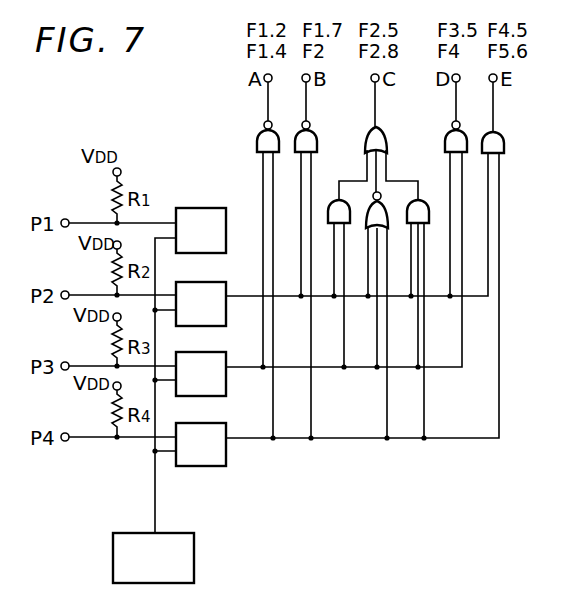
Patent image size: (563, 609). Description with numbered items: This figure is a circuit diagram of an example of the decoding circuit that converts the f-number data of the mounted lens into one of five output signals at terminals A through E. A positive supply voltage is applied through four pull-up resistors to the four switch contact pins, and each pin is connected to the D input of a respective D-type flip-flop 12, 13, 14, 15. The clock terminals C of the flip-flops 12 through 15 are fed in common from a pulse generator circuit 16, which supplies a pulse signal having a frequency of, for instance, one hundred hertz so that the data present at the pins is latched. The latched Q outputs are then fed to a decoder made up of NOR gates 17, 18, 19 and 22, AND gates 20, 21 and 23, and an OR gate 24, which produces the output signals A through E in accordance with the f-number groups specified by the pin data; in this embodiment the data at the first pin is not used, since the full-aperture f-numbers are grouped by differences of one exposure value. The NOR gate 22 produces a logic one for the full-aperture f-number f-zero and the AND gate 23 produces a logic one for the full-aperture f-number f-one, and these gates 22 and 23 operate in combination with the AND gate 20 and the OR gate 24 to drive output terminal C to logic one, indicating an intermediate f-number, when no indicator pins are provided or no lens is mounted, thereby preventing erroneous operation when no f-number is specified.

The D-type flip-flop 12 is at (201, 208).
The D-type flip-flop 13 is at (213, 282).
The D-type flip-flop 14 is at (213, 352).
The D-type flip-flop 15 is at (210, 423).
The pulse generator circuit 16 is at (194, 568).
The NOR gate 17 is at (262, 130).
The NOR gate 18 is at (312, 136).
The NOR gate 19 is at (447, 136).
The AND gate 20 is at (333, 200).
The AND gate 21 is at (486, 142).
The NOR gate 22 is at (370, 213).
The AND gate 23 is at (427, 199).
The OR gate 24 is at (388, 141).